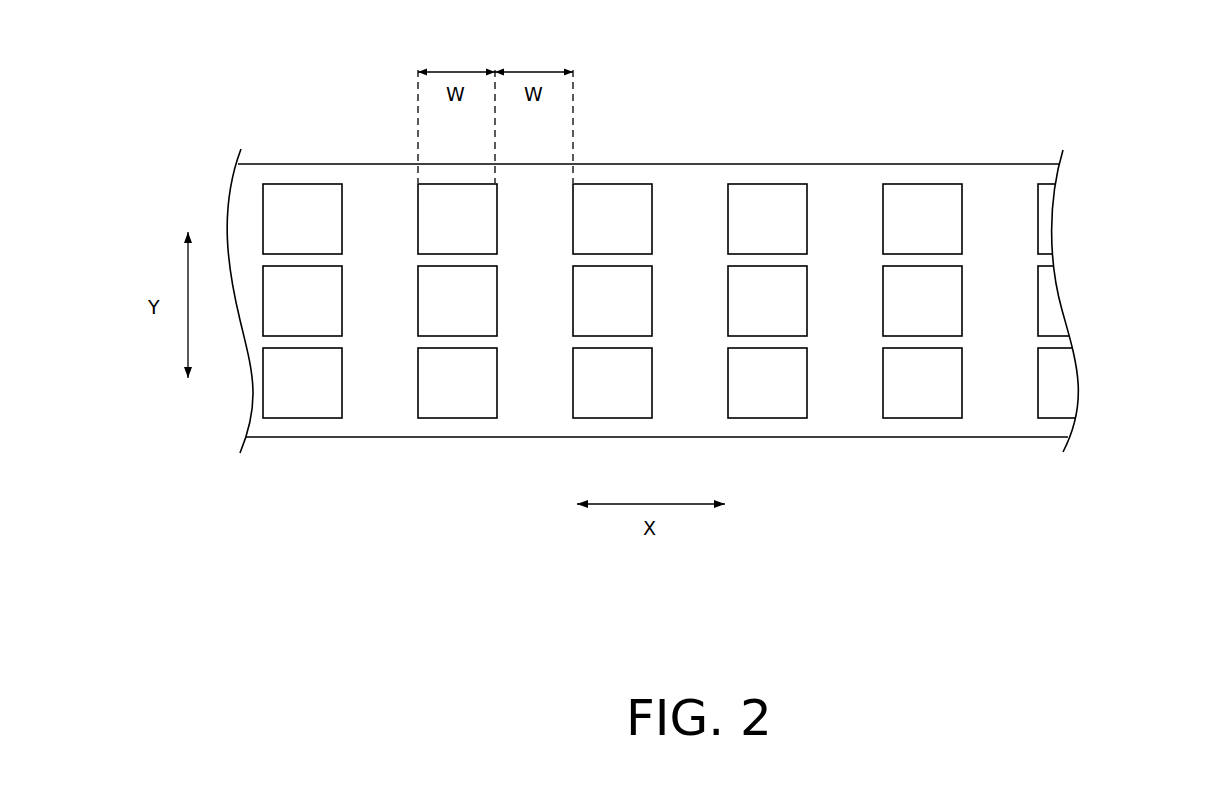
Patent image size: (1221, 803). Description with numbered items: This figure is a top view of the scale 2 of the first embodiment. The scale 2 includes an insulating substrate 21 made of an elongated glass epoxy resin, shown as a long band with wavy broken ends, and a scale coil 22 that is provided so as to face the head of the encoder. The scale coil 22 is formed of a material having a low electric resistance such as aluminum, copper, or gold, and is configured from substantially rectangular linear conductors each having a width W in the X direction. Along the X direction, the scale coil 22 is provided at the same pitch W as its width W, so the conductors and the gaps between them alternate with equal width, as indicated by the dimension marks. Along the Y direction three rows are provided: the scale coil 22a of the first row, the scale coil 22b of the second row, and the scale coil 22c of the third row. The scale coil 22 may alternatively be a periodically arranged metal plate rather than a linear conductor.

The scale 2 is at (706, 262).
The insulating substrate 21 is at (785, 170).
The scale coil 22 is at (725, 306).
The scale coil of the first row 22a is at (1072, 210).
The scale coil of the second row 22b is at (1072, 297).
The scale coil of the third row 22c is at (1093, 387).